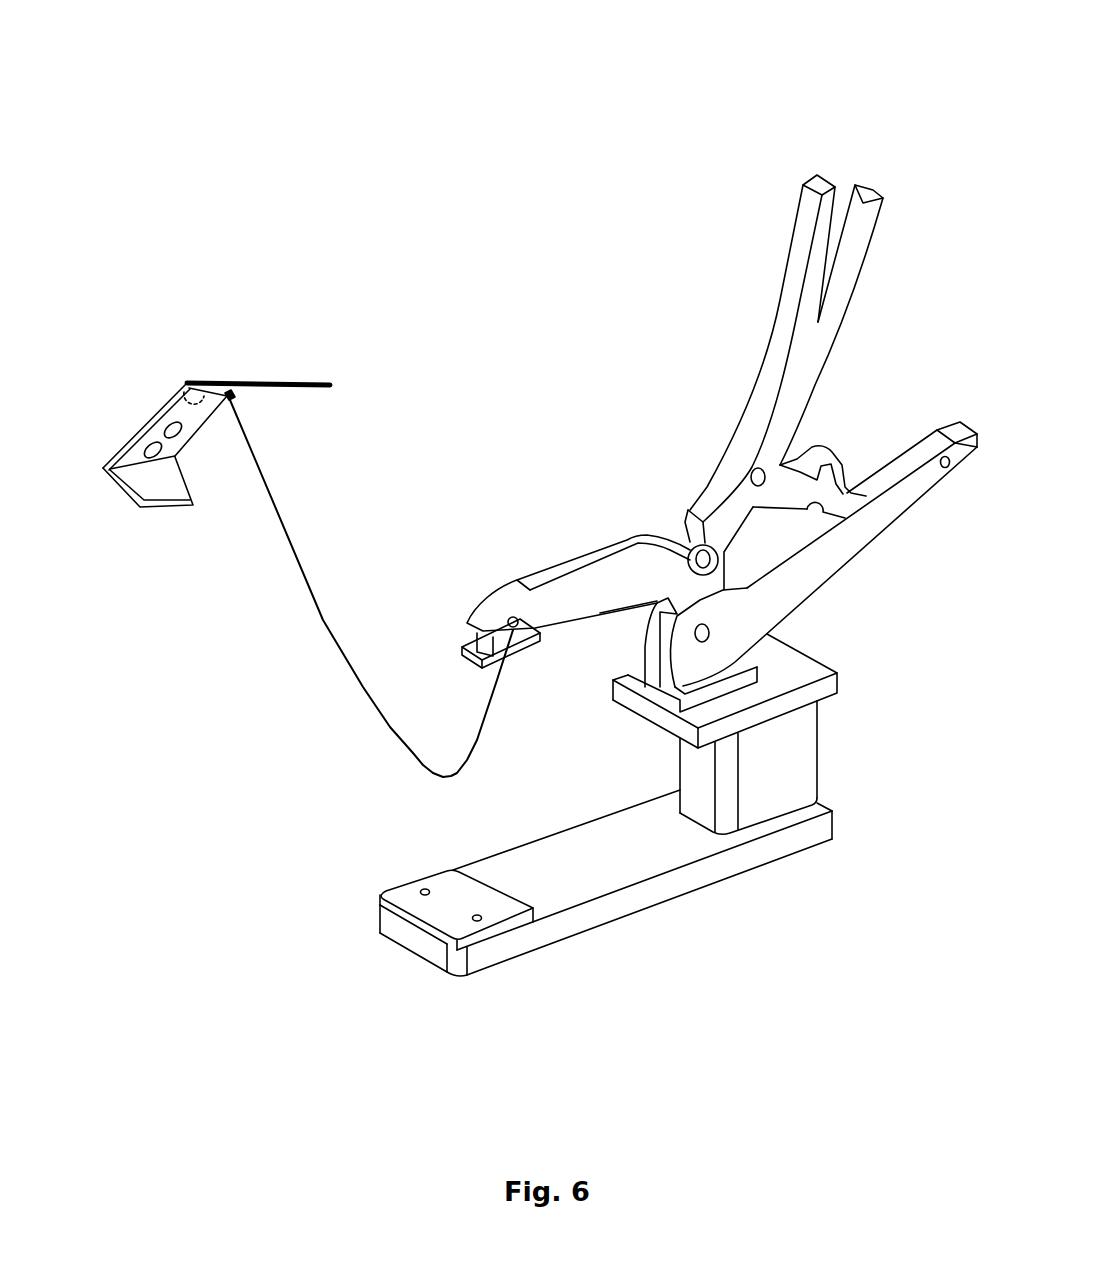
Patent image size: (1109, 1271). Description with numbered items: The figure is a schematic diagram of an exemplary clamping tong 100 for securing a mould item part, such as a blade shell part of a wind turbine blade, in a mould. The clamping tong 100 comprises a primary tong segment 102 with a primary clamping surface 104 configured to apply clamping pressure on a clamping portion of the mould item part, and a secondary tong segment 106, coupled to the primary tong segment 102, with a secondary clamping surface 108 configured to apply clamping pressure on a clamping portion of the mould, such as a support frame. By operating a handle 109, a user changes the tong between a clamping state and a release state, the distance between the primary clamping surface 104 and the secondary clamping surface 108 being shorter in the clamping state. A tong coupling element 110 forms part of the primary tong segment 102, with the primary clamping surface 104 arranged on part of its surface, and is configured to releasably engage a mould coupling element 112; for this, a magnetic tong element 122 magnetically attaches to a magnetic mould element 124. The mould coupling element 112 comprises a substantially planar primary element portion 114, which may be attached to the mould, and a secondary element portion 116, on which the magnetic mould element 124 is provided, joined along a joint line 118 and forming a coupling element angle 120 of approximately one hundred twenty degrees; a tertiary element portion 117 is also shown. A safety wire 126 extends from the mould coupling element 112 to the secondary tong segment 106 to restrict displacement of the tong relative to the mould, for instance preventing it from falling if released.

The clamping tong 100 is at (712, 108).
The primary tong segment 102 is at (639, 983).
The primary clamping surface 104 is at (403, 893).
The secondary tong segment 106 is at (651, 478).
The secondary clamping surface 108 is at (517, 663).
The tong handle 109 is at (780, 335).
The tong coupling element 110 is at (670, 895).
The mould coupling element 112 is at (239, 312).
The primary element portion 114 is at (280, 383).
The secondary element portion 116 is at (128, 438).
The tertiary element portion 117 is at (138, 508).
The joint line 118 is at (187, 382).
The coupling element angle 120 is at (195, 405).
The magnetic tong element 122 is at (725, 734).
The magnetic mould element 124 is at (178, 455).
The safety wire 126 is at (300, 553).